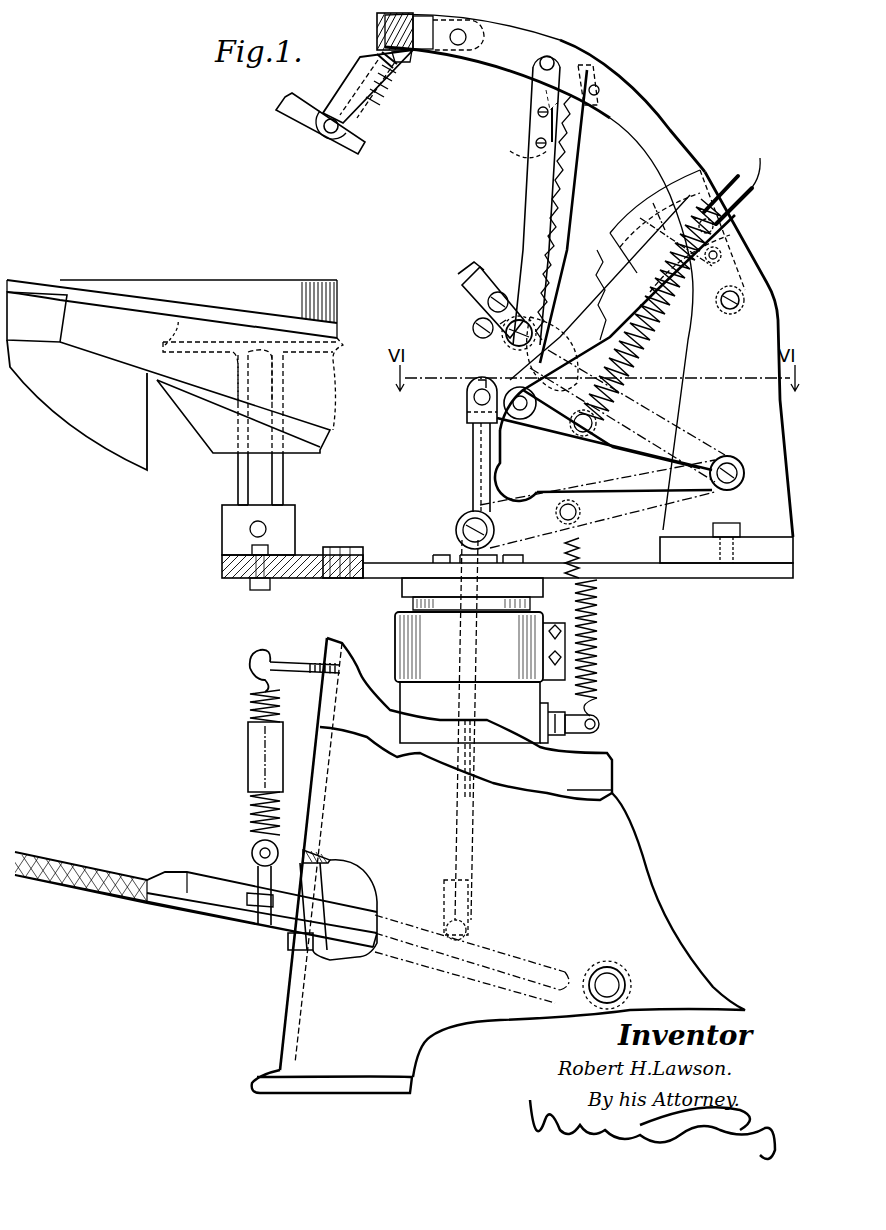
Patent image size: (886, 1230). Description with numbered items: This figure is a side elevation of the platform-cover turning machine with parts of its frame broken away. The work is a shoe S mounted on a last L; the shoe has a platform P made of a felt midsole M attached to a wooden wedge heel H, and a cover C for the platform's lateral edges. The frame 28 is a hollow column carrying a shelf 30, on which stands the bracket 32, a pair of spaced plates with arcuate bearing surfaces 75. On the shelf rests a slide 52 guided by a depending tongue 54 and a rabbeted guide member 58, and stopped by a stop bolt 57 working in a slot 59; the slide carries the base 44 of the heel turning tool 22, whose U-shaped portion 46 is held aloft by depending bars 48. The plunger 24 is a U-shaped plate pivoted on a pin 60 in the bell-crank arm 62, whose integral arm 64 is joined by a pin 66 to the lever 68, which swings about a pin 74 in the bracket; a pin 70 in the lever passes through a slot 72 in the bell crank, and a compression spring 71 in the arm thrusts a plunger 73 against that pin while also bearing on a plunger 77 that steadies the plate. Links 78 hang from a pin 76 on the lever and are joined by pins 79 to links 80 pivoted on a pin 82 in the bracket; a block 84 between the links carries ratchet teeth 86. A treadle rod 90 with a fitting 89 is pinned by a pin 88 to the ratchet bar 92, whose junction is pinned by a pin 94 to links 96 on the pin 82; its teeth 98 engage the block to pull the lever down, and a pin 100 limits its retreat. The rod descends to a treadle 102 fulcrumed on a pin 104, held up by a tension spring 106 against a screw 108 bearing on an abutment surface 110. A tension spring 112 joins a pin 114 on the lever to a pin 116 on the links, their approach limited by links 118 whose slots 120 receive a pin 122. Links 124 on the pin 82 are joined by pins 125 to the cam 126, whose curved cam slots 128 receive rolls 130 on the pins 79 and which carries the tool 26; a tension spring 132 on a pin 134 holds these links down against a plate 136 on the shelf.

The heel turning tool 22 is at (215, 485).
The plunger 24 is at (285, 106).
The tool 26 is at (462, 292).
The frame 28 is at (630, 828).
The shelf 30 is at (308, 580).
The bracket 32 is at (767, 305).
The base 44 is at (222, 515).
The U-shaped portion 46 is at (160, 328).
The depending parallel spaced bars 48 is at (273, 476).
The slide 52 is at (300, 553).
The depending tongue 54 is at (228, 575).
The stop bolt 57 is at (257, 590).
The rabbeted guide member 58 is at (352, 547).
The slot 59 is at (263, 580).
The horizontal pin 60 is at (336, 135).
The bell-crank arm 62 is at (375, 83).
The arm 64 is at (413, 50).
The horizontal pin 66 is at (466, 37).
The lever 68 is at (528, 45).
The horizontal pin 70 is at (429, 32).
The compression spring 71 is at (372, 98).
The slot 72 is at (378, 22).
The plunger 73 is at (378, 50).
The horizontal pin 74 is at (736, 308).
The arcuate finished bearing surfaces 75 is at (677, 231).
The pin 76 is at (553, 60).
The plunger 77 is at (363, 112).
The links 78 is at (530, 175).
The pins 79 is at (515, 320).
The links 80 is at (640, 412).
The pin 82 is at (740, 480).
The block 84 is at (514, 150).
The ratchet teeth 86 is at (555, 118).
The pin 88 is at (466, 402).
The fitting 89 is at (468, 420).
The treadle rod 90 is at (472, 448).
The ratchet bar 92 is at (570, 160).
The pin 94 is at (522, 412).
The links 96 is at (610, 445).
The ratchet teeth 98 is at (540, 133).
The pin 100 is at (600, 88).
The treadle 102 is at (78, 860).
The pin 104 is at (612, 975).
The tension spring 106 is at (248, 703).
The screw 108 is at (330, 910).
The abutment surface 110 is at (265, 925).
The tension spring 112 is at (684, 352).
The pin 114 is at (722, 250).
The pin 116 is at (592, 426).
The links 118 is at (612, 305).
The longitudinal slots 120 is at (735, 180).
The pin 122 is at (714, 224).
The links 124 is at (595, 520).
The pins 125 is at (456, 527).
The cam 126 is at (512, 355).
The cam slots 128 is at (505, 475).
The rolls 130 is at (503, 342).
The tension spring 132 is at (598, 657).
The pin 134 is at (578, 508).
The plate 136 is at (432, 556).
The shoe S is at (120, 255).
The felt midsole M is at (140, 293).
The platform P is at (197, 297).
The wooden wedge heel H is at (253, 290).
The cover C is at (325, 392).
The last L is at (90, 426).